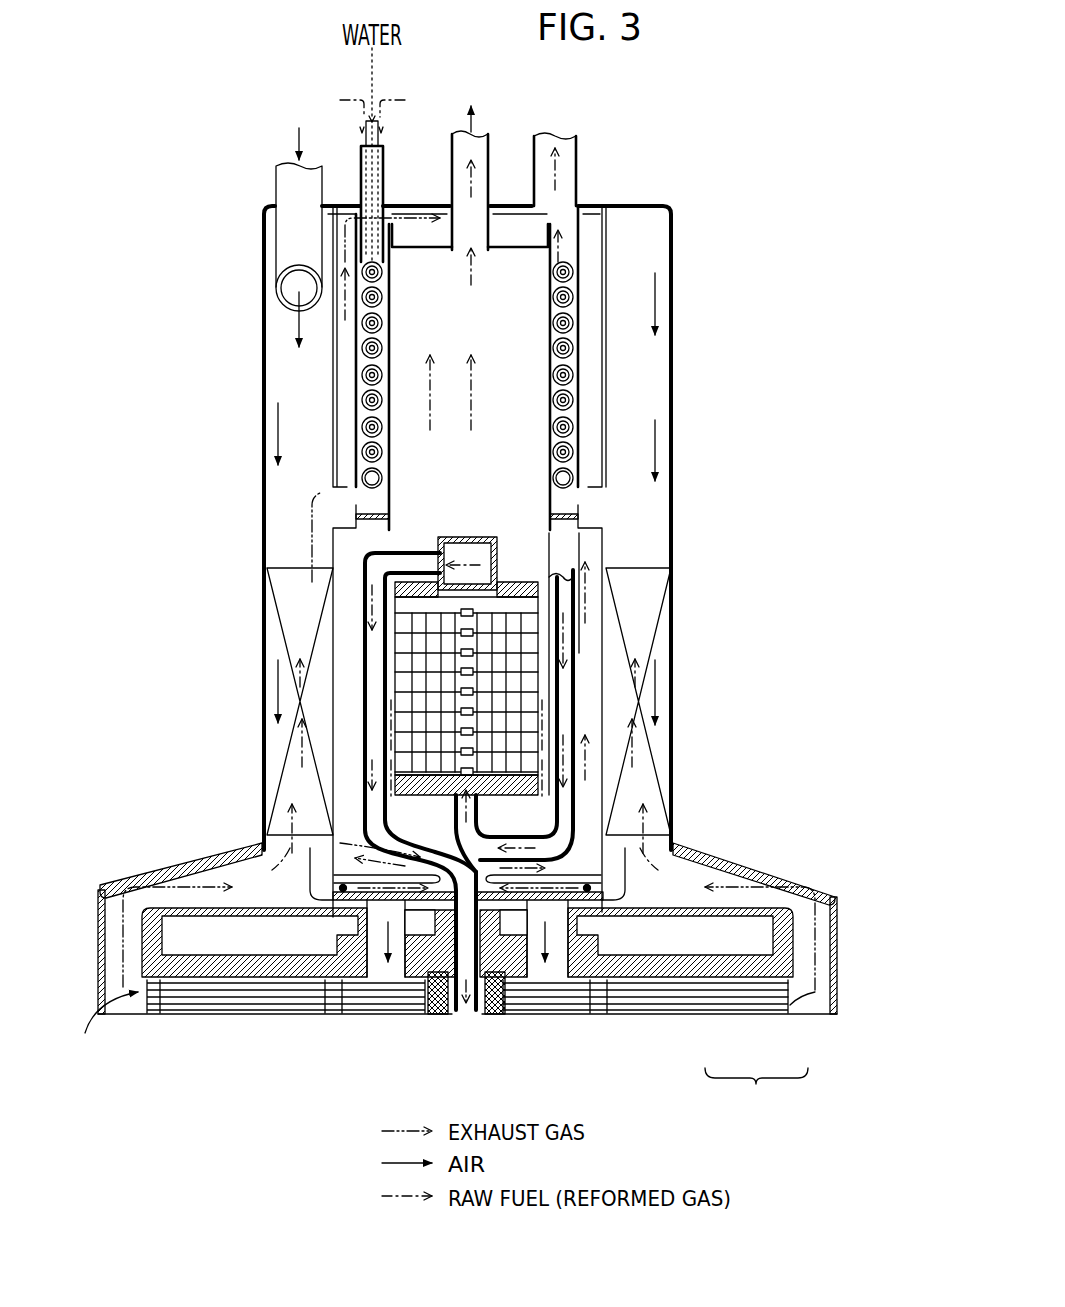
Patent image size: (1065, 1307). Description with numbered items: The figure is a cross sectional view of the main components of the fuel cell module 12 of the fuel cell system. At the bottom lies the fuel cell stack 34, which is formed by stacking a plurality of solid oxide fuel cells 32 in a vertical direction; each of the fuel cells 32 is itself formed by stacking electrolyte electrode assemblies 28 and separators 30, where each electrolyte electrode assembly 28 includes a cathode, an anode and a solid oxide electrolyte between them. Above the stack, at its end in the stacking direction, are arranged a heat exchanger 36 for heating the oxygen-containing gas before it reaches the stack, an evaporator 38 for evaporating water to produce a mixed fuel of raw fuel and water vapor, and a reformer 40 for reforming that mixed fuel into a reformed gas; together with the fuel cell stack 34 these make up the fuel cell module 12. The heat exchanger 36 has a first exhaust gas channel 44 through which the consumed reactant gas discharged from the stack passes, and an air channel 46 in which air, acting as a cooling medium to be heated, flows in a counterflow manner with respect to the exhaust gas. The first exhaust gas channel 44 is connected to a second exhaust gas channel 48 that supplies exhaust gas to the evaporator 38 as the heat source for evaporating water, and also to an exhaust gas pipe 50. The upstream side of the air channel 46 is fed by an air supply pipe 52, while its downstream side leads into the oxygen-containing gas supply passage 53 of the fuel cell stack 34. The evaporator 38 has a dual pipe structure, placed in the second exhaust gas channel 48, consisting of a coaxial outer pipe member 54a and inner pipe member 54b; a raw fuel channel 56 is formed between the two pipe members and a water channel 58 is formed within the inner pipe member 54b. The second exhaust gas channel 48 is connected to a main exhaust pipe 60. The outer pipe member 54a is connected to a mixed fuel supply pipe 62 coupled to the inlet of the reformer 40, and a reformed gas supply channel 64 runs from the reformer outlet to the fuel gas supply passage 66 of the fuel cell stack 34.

The fuel cell module 12 is at (235, 105).
The electrolyte electrode assembly 28 is at (734, 1016).
The separator 30 is at (782, 1016).
The solid oxide fuel cell 32 is at (756, 1089).
The fuel cell stack 34 is at (100, 1014).
The heat exchanger 36 is at (262, 623).
The evaporator 38 is at (353, 452).
The reformer 40 is at (388, 636).
The first exhaust gas channel 44 is at (297, 752).
The air channel 46 is at (276, 684).
The second exhaust gas channel 48 is at (346, 484).
The exhaust gas pipe 50 is at (488, 165).
The air supply pipe 52 is at (305, 186).
The oxygen-containing gas supply passage 53 is at (372, 1016).
The outer pipe member 54a is at (372, 168).
The inner pipe member 54b is at (383, 128).
The raw fuel channel 56 is at (378, 271).
The water channel 58 is at (367, 64).
The main exhaust pipe 60 is at (578, 158).
The mixed fuel supply pipe 62 is at (575, 668).
The reformed gas supply channel 64 is at (364, 616).
The fuel gas supply passage 66 is at (455, 1016).